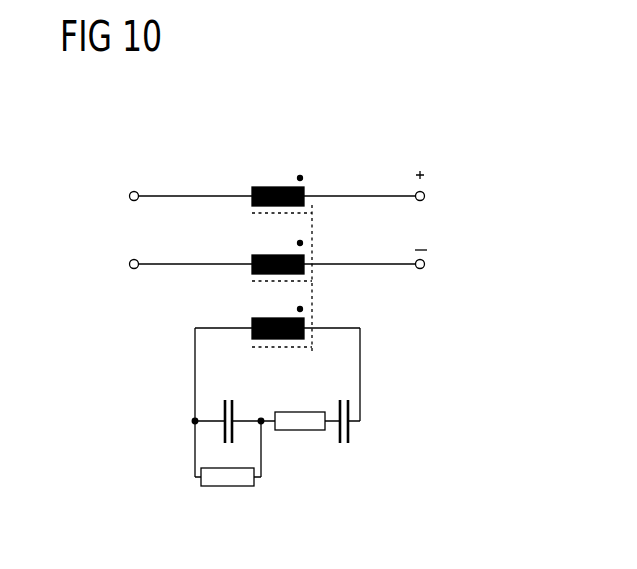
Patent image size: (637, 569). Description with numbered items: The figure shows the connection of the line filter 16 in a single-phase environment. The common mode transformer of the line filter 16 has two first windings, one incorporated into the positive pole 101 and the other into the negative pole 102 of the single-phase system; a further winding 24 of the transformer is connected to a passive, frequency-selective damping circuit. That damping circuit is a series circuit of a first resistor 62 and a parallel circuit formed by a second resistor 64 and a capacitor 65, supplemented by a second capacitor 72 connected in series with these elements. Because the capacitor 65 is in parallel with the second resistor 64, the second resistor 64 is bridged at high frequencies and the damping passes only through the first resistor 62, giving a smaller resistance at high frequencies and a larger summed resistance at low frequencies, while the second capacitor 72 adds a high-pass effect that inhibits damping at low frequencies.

The line filter 16 is at (279, 209).
The positive pole 101 is at (171, 195).
The negative pole 102 is at (160, 267).
The secondary winding 24 is at (305, 324).
The capacitor 65 is at (235, 405).
The first resistor 62 is at (283, 432).
The second capacitor 72 is at (352, 431).
The second resistor 64 is at (200, 482).